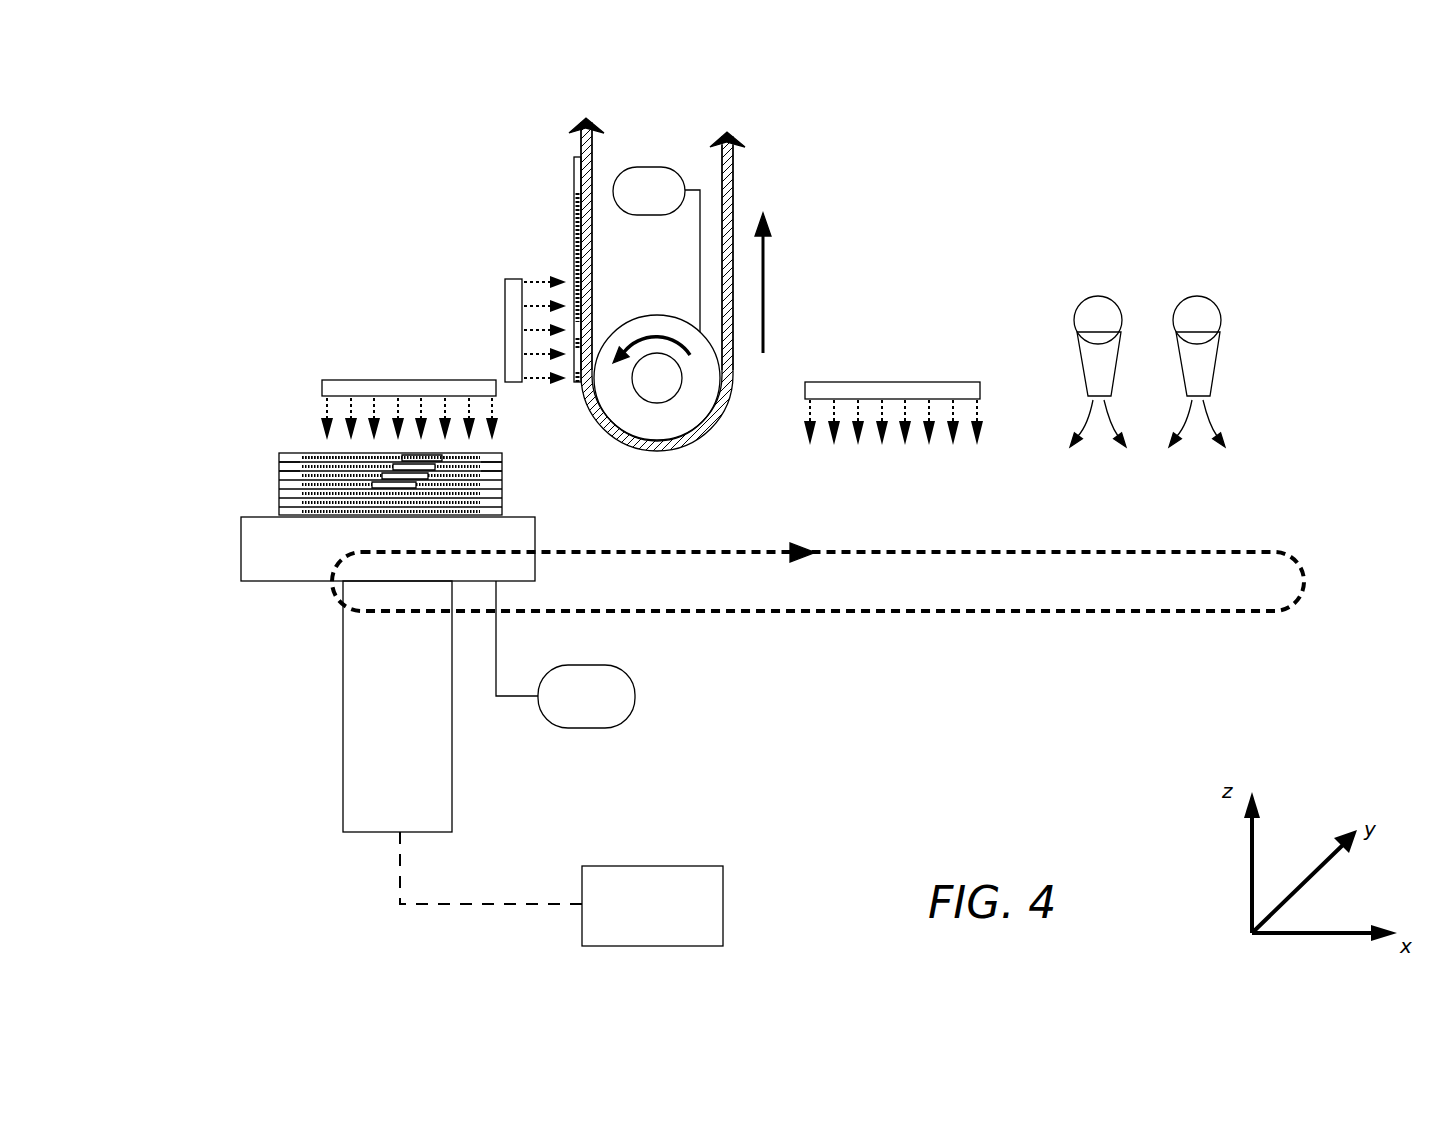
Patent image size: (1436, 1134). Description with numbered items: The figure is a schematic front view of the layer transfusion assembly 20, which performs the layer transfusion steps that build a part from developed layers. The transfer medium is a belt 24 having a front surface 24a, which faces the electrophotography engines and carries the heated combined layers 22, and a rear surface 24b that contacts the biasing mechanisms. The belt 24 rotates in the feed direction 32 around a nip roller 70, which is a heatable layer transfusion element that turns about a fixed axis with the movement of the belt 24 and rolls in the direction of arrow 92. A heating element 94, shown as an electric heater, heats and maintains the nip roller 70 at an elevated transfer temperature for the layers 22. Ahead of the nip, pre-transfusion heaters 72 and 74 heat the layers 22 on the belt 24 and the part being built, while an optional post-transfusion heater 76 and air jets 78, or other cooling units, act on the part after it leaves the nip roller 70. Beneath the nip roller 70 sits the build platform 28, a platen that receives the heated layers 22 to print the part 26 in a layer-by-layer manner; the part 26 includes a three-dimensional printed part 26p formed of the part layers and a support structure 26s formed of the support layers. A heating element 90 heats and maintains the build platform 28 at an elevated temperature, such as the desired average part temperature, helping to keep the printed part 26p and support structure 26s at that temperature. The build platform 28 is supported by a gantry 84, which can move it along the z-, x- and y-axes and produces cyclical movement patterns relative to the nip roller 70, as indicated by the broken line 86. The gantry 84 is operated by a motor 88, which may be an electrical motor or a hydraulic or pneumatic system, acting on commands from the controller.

The layer transfusion assembly 20 is at (1303, 643).
The heated combined layers 22 is at (558, 236).
The transfer medium belt 24 is at (580, 139).
The front surface 24a is at (748, 181).
The rear surface 24b is at (601, 144).
The part 26 is at (258, 448).
The 3D part 26p is at (316, 453).
The support structure 26s is at (279, 485).
The build platform 28 is at (241, 553).
The feed direction 32 is at (767, 262).
The nip roller 70 is at (607, 360).
The pre-transfusion heater 72 is at (493, 287).
The pre-transfusion heater 74 is at (359, 368).
The post-transfusion heater 76 is at (887, 368).
The air jets 78 is at (1197, 296).
The gantry 84 is at (452, 760).
The broken line 86 is at (935, 613).
The motor 88 is at (723, 895).
The heating element 90 is at (635, 691).
The arrow 92 is at (673, 338).
The heating element 94 is at (635, 167).